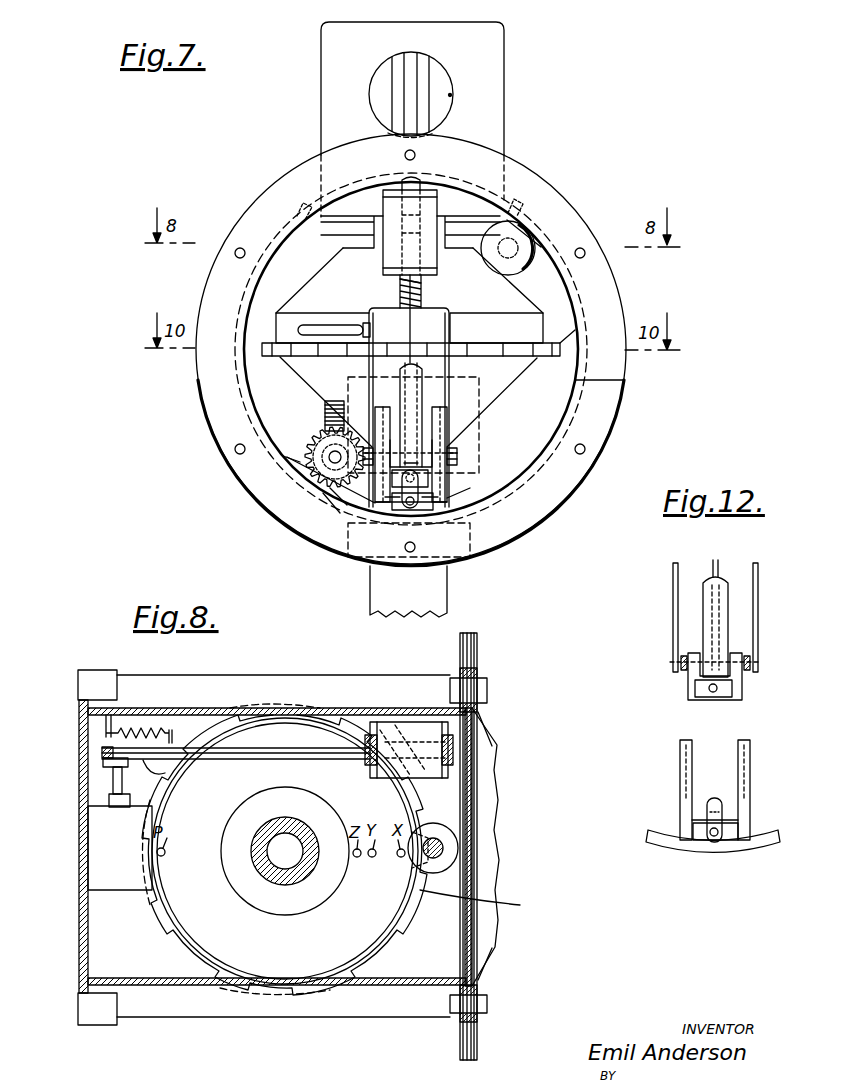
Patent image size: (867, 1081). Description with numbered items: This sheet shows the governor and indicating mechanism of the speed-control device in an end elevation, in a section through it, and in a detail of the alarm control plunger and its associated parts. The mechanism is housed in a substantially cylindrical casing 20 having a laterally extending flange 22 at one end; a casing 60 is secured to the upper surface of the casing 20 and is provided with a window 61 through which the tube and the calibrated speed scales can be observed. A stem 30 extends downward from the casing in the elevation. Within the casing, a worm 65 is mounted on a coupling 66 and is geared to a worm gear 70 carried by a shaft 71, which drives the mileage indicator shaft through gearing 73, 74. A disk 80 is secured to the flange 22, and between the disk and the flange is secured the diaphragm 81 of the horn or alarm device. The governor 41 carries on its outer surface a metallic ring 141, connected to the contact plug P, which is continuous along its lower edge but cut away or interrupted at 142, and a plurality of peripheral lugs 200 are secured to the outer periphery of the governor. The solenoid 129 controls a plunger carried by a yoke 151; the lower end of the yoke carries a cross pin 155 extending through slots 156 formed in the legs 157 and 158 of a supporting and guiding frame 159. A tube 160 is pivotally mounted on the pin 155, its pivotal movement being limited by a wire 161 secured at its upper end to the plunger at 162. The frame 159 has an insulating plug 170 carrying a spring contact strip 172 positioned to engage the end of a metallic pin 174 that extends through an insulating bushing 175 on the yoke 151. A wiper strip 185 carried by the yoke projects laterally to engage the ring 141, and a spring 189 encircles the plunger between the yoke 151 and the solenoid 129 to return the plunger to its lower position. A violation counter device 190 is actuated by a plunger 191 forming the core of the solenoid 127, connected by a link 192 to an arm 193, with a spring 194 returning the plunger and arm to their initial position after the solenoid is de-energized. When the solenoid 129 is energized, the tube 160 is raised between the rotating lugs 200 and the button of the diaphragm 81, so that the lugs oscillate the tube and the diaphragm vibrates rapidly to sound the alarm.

In FIG. 7, the casing 20 is at (612, 381).
In FIG. 7, the flange 22 is at (598, 416).
In FIG. 7, the stem 30 is at (447, 585).
In FIG. 7, the governor 41 is at (525, 365).
In FIG. 8, the governor 41 is at (380, 920).
In FIG. 7, the casing 60 is at (505, 46).
In FIG. 7, the window 61 is at (452, 96).
In FIG. 7, the worm 65 is at (458, 457).
In FIG. 7, the coupling 66 is at (445, 479).
In FIG. 7, the worm gear 70 is at (319, 434).
In FIG. 7, the shaft 71 is at (333, 470).
In FIG. 7, the gearing 73 is at (337, 460).
In FIG. 7, the gearing 74 is at (325, 411).
In FIG. 8, the disk 80 is at (494, 732).
In FIG. 8, the diaphragm 81 is at (472, 768).
In FIG. 7, the solenoid 127 is at (532, 263).
In FIG. 8, the solenoid 127 is at (398, 725).
In FIG. 8, the solenoid 129 is at (450, 849).
In FIG. 7, the metallic ring 141 is at (512, 316).
In FIG. 8, the metallic ring 141 is at (322, 975).
In FIG. 7, the cut-away portion 142 is at (284, 313).
In FIG. 8, the cut-away portion 142 is at (240, 975).
In FIG. 7, the yoke 151 is at (463, 312).
In FIG. 12, the yoke 151 is at (675, 575).
In FIG. 7, the cross pin 155 is at (448, 440).
In FIG. 12, the cross pin 155 is at (670, 663).
In FIG. 7, the slots 156 is at (395, 430).
In FIG. 12, the slots 156 is at (680, 765).
In FIG. 7, the leg 157 is at (446, 408).
In FIG. 12, the leg 157 is at (745, 745).
In FIG. 7, the leg 158 is at (368, 432).
In FIG. 12, the leg 158 is at (682, 745).
In FIG. 7, the supporting and guiding frame 159 is at (452, 500).
In FIG. 12, the supporting and guiding frame 159 is at (690, 838).
In FIG. 7, the tube 160 is at (398, 369).
In FIG. 12, the tube 160 is at (730, 598).
In FIG. 7, the wire 161 is at (414, 320).
In FIG. 12, the wire 161 is at (725, 560).
In FIG. 7, the wire attachment 162 is at (425, 292).
In FIG. 7, the insulating plug 170 is at (425, 508).
In FIG. 12, the insulating plug 170 is at (730, 842).
In FIG. 7, the spring contact strip 172 is at (406, 503).
In FIG. 12, the spring contact strip 172 is at (707, 805).
In FIG. 7, the metallic pin 174 is at (404, 480).
In FIG. 12, the metallic pin 174 is at (711, 692).
In FIG. 12, the insulating bushing 175 is at (730, 688).
In FIG. 7, the wiper strip 185 is at (355, 302).
In FIG. 7, the spring 189 is at (397, 282).
In FIG. 8, the violation counter device 190 is at (95, 878).
In FIG. 8, the plunger 191 is at (318, 759).
In FIG. 8, the link 192 is at (190, 755).
In FIG. 8, the arm 193 is at (100, 760).
In FIG. 8, the spring 194 is at (148, 730).
In FIG. 7, the peripheral lugs 200 is at (562, 341).
In FIG. 8, the peripheral lugs 200 is at (478, 902).